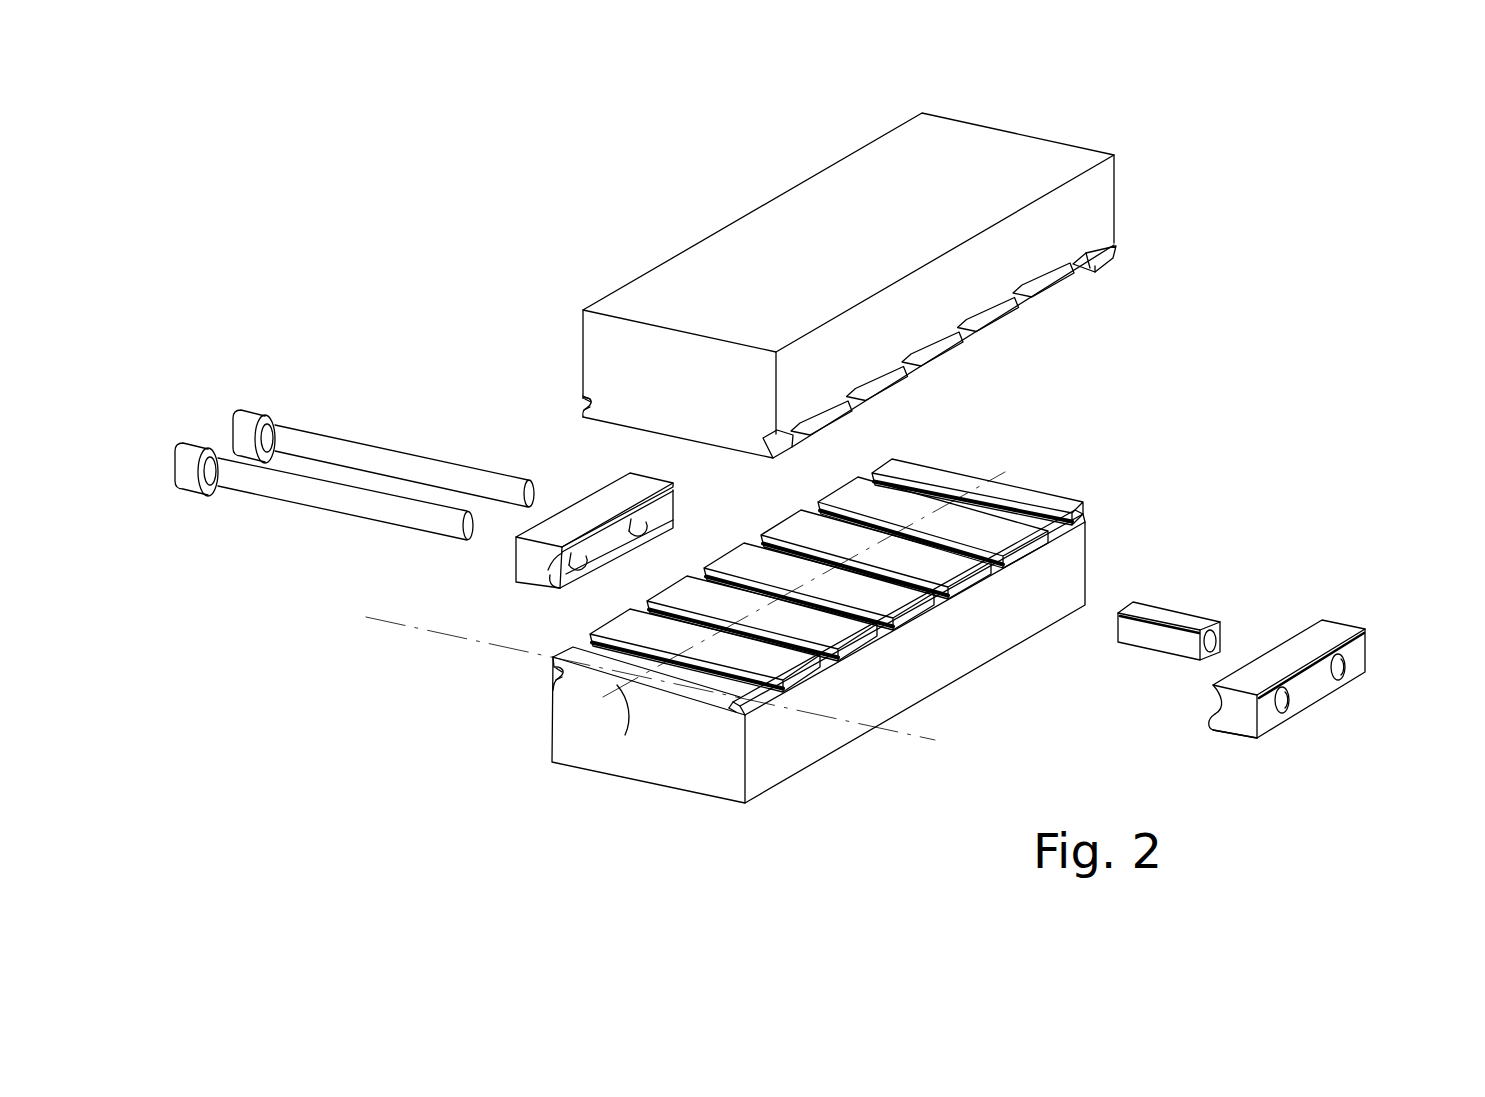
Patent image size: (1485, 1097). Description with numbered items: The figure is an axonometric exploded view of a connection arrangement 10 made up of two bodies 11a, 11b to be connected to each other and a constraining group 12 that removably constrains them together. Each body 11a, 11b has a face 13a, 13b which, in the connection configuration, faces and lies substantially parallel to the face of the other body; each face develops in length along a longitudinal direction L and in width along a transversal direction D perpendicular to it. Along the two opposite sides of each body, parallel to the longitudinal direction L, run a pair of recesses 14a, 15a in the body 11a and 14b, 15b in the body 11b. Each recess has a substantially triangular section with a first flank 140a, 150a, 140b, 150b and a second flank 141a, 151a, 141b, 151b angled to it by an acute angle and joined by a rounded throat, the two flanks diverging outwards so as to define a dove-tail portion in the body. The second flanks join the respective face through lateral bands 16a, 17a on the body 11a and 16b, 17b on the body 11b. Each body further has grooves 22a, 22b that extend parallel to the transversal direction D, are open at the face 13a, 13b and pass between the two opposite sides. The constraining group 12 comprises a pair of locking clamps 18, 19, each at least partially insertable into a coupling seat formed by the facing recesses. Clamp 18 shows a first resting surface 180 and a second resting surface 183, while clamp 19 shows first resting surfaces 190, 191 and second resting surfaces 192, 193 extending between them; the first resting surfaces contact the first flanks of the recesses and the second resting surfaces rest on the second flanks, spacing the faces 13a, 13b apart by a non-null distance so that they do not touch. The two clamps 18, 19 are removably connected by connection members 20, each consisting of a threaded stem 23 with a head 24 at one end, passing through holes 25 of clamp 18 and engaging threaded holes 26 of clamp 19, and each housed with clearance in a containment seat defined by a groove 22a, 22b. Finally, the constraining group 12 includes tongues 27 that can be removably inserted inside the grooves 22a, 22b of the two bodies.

The connection arrangement 10 is at (406, 171).
The body 11a is at (1068, 139).
The body 11b is at (1094, 595).
The constraining group 12 is at (328, 537).
The face 13a is at (1084, 278).
The face 13b is at (1002, 522).
The recess 14a is at (562, 402).
The recess 14b is at (546, 673).
The first flank 140a is at (582, 398).
The first flank 140b is at (552, 682).
The second flank 141a is at (576, 410).
The second flank 141b is at (547, 671).
The recess 15a is at (1124, 246).
The recess 15b is at (766, 723).
The first flank 150a is at (1118, 252).
The first flank 150b is at (743, 719).
The second flank 151a is at (1118, 258).
The second flank 151b is at (736, 716).
The lateral band 16a is at (583, 423).
The lateral band 16b is at (550, 656).
The lateral band 17a is at (1105, 268).
The lateral band 17b is at (778, 697).
The locking clamp 18 is at (507, 560).
The first resting surface 180 is at (640, 478).
The second resting surface 183 is at (560, 583).
The locking clamp 19 is at (1320, 714).
The first resting surface 190 is at (1333, 630).
The first resting surface 191 is at (1256, 741).
The second resting surface 192 is at (1210, 690).
The second resting surface 193 is at (1210, 723).
The connection member 20 is at (239, 399).
The groove 22a is at (913, 373).
The groove 22b is at (963, 595).
The threaded stem 23 is at (312, 429).
The head 24 is at (185, 496).
The through hole 25 is at (594, 545).
The threaded hole 26 is at (1350, 672).
The tongue 27 is at (1186, 612).
The longitudinal direction L is at (614, 756).
The transversal direction D is at (370, 622).